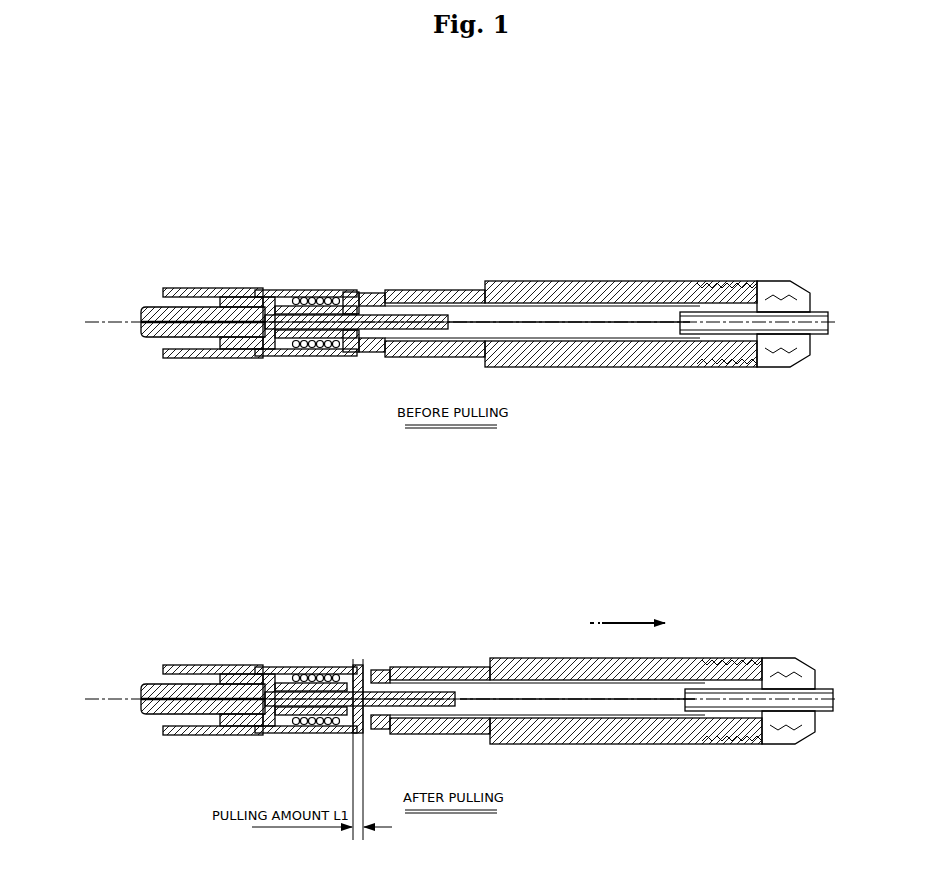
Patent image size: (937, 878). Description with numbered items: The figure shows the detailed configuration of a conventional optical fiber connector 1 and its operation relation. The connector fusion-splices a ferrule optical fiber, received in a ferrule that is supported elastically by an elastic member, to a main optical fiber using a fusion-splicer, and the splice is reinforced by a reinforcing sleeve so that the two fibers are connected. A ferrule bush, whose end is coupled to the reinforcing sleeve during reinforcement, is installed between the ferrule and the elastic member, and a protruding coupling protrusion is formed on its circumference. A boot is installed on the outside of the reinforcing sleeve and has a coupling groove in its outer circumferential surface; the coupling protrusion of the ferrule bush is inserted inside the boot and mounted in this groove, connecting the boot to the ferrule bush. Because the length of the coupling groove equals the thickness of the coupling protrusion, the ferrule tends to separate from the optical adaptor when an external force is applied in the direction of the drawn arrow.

The optical fiber connector 1 is at (170, 236).